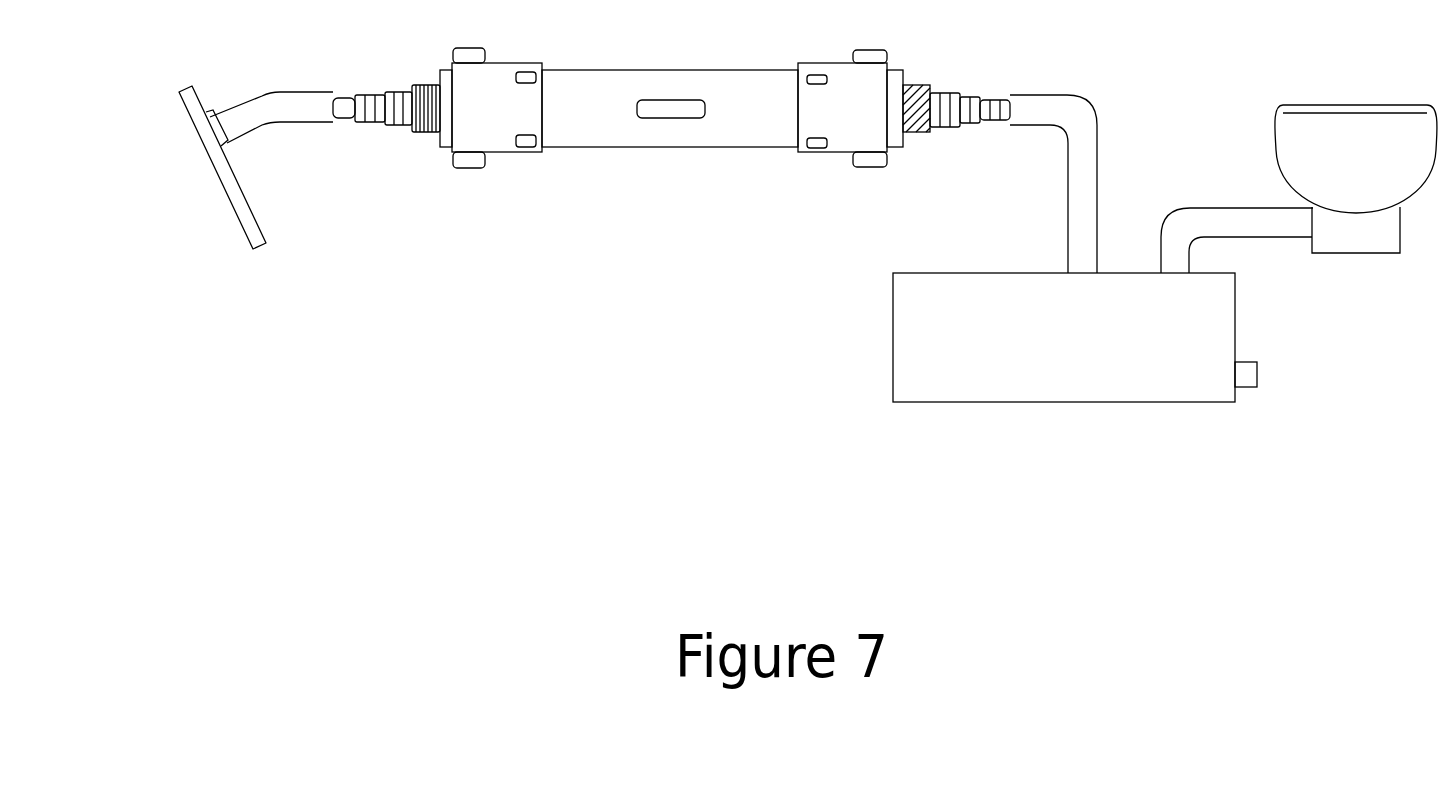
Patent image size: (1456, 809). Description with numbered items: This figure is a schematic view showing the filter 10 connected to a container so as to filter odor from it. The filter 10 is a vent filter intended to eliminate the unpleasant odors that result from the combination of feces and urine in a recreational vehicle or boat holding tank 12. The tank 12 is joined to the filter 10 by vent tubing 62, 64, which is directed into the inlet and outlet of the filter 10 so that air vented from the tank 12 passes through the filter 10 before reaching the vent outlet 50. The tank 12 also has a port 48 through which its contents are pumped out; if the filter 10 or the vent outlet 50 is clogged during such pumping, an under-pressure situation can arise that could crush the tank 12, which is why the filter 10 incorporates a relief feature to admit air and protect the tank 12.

The filter 10 is at (677, 68).
The holding tank 12 is at (1237, 298).
The port 48 is at (1258, 374).
The vent outlet 50 is at (193, 144).
The tubing 62 is at (1035, 90).
The tubing 64 is at (306, 87).